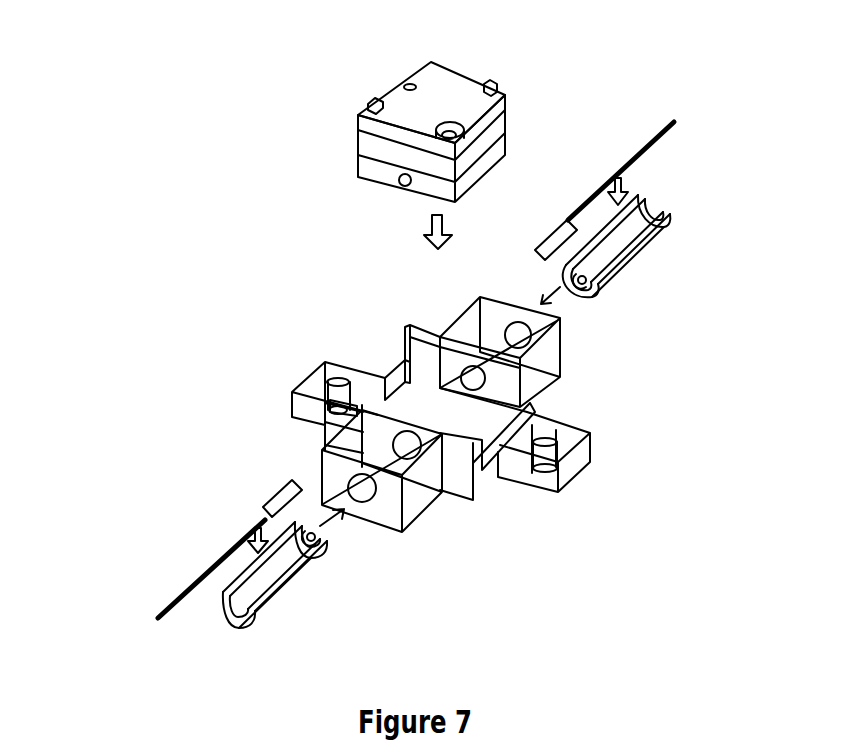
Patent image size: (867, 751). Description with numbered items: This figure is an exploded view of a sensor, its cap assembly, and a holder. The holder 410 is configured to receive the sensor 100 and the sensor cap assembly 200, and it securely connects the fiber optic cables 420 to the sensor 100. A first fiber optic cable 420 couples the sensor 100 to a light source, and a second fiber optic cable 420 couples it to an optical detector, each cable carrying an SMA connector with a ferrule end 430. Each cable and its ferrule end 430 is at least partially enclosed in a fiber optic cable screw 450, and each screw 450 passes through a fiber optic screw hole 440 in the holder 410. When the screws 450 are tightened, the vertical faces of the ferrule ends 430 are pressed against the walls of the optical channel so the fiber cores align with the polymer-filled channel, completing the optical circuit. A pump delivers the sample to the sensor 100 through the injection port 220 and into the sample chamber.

The sensor 100 is at (514, 141).
The sensor cap assembly 200 is at (517, 99).
The injection port 220 is at (411, 84).
The holder 410 is at (597, 458).
The fiber optic cable 420 is at (667, 134).
The ferrule end 430 is at (533, 233).
The fiber optic screw hole 440 is at (530, 342).
The fiber optic cable screw 450 is at (627, 263).